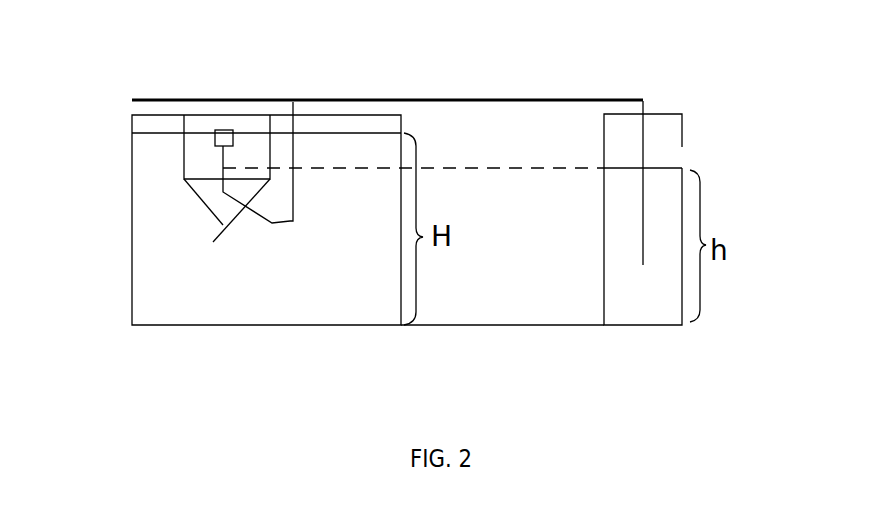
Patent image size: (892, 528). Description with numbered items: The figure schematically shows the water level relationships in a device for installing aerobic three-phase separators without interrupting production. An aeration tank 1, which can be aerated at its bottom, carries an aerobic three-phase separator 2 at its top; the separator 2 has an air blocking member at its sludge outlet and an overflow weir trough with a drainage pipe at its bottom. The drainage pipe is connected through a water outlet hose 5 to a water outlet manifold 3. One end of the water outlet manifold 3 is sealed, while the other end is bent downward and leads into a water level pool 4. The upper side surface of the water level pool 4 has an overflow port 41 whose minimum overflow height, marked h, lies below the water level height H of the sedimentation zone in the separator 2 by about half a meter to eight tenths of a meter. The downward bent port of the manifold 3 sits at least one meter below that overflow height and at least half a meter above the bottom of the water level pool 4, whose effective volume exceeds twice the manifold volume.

The aeration tank 1 is at (278, 298).
The aerobic three-phase separator 2 is at (202, 165).
The water outlet manifold 3 is at (333, 98).
The water level pool 4 is at (650, 303).
The overflow port 41 is at (682, 157).
The water outlet hose 5 is at (293, 192).